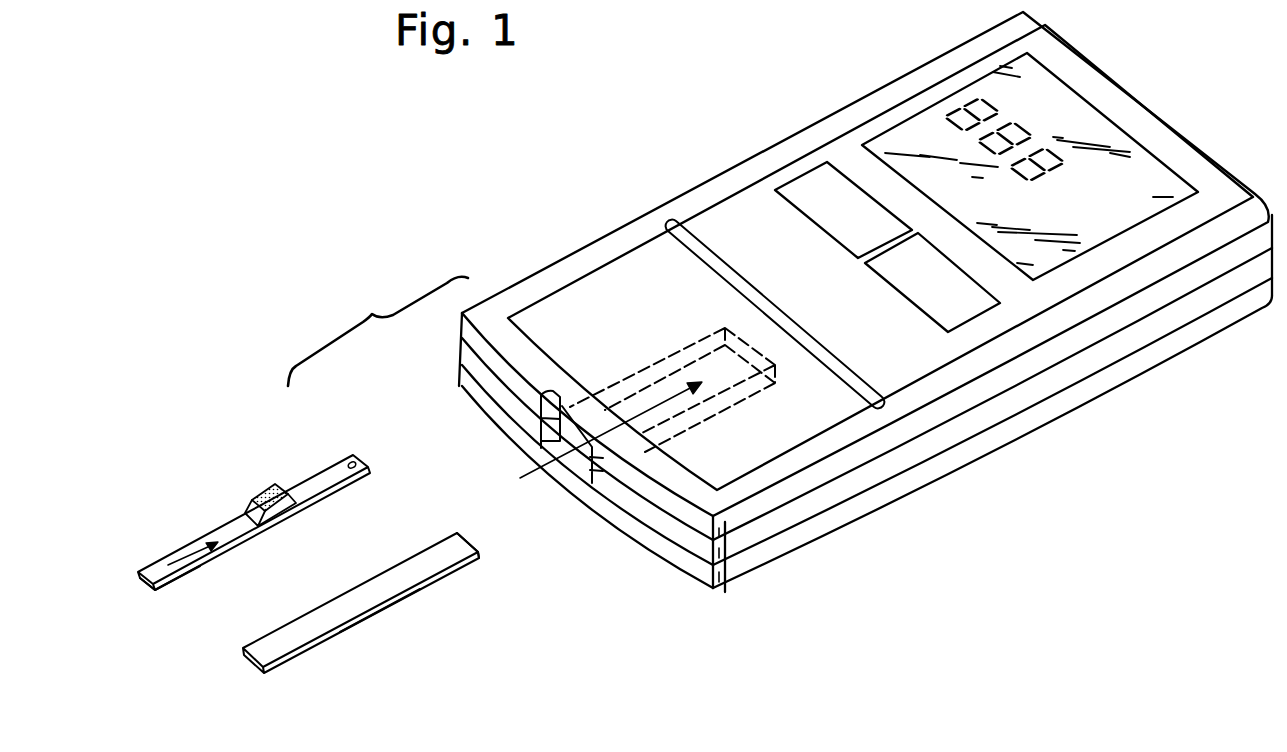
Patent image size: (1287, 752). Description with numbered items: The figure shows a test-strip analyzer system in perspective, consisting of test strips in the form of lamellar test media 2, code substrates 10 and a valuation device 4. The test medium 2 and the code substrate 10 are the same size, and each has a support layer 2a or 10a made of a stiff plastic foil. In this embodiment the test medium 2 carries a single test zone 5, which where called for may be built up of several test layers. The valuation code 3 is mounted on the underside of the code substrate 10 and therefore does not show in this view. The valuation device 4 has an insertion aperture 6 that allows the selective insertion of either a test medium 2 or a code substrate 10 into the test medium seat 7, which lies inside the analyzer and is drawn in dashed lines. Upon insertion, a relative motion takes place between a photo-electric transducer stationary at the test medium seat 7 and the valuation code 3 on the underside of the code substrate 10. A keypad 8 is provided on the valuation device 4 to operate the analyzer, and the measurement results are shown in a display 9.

The test medium 2 is at (313, 487).
The support layer 2a is at (172, 580).
The valuation code 3 is at (381, 611).
The valuation device 4 is at (1077, 392).
The test zone 5 is at (257, 493).
The insertion aperture 6 is at (573, 456).
The test medium seat 7 is at (648, 367).
The keypad 8 is at (803, 187).
The display 9 is at (1112, 140).
The code substrate 10 is at (305, 642).
The support layer 10a is at (437, 578).